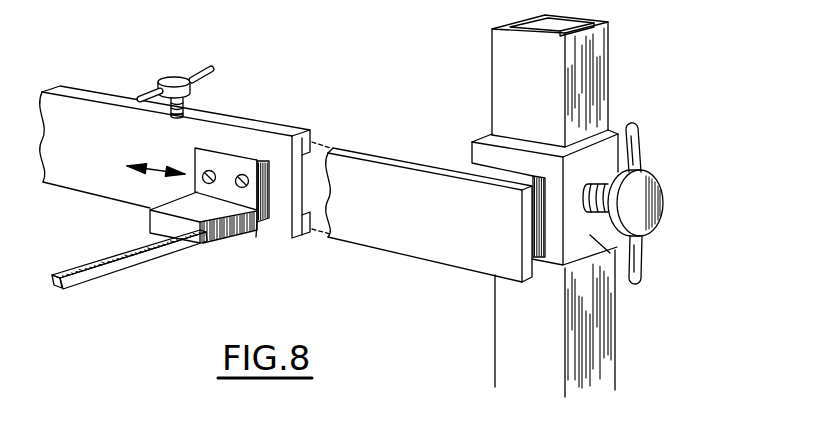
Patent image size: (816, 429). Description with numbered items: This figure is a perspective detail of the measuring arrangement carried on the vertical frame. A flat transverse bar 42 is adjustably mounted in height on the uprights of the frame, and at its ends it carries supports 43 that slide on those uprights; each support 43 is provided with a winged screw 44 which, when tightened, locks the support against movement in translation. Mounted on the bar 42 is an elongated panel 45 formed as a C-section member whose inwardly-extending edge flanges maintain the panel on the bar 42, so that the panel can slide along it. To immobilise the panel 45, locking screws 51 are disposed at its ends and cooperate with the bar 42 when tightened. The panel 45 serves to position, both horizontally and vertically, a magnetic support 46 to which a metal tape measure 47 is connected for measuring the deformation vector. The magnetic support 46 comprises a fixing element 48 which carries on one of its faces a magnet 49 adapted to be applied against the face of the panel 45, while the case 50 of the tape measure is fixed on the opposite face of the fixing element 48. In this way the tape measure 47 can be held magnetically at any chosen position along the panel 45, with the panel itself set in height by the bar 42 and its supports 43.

The flat transverse bar 42 is at (427, 195).
The support 43 is at (617, 247).
The winged screw 44 is at (658, 187).
The elongated panel 45 is at (65, 115).
The magnetic support 46 is at (252, 237).
The metal tape measure 47 is at (126, 256).
The fixing element 48 is at (229, 166).
The magnet 49 is at (268, 183).
The case of the tape measure 50 is at (227, 243).
The locking screw 51 is at (173, 77).